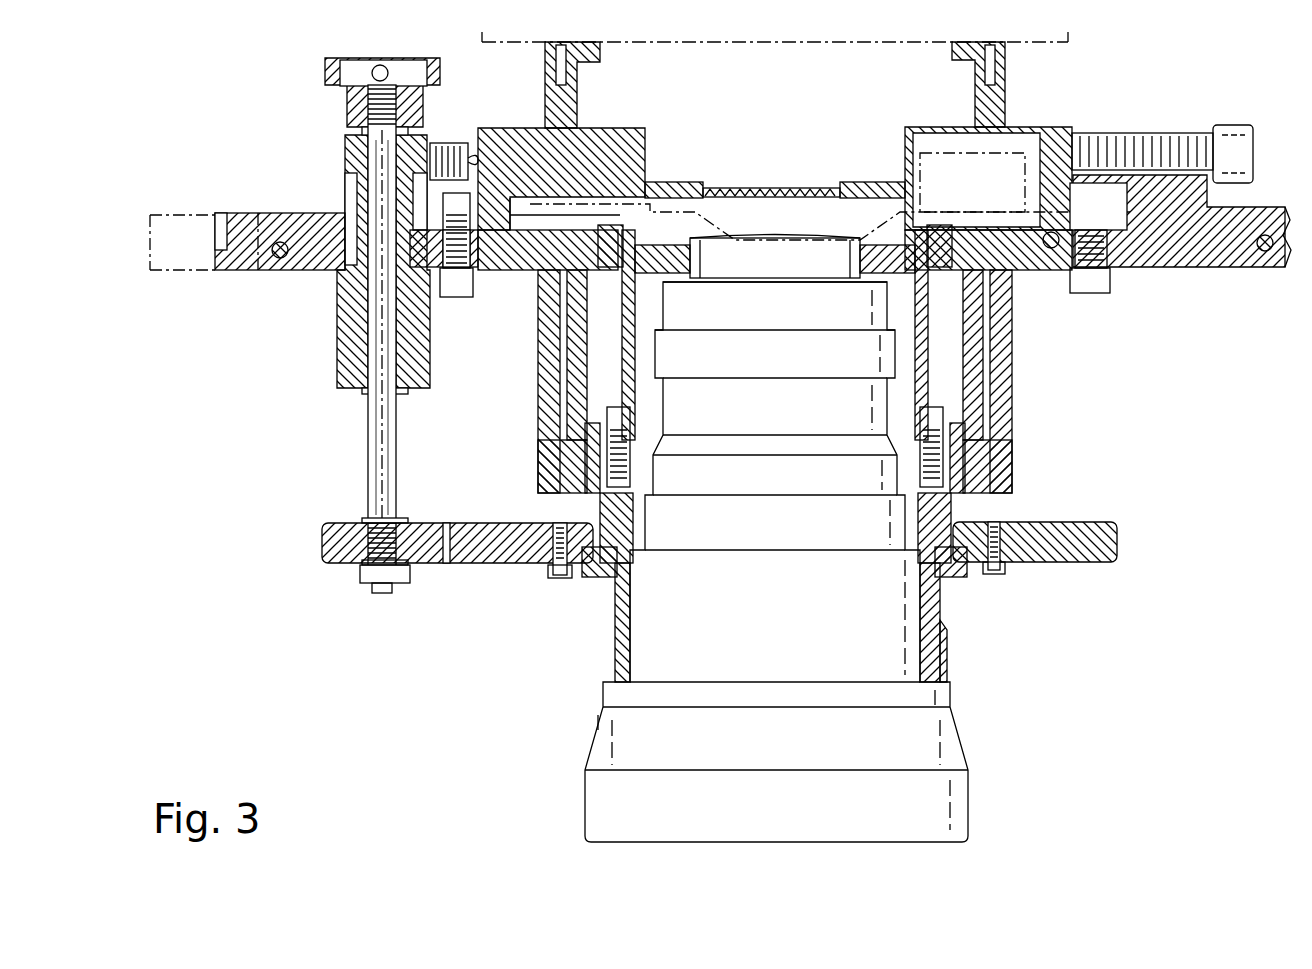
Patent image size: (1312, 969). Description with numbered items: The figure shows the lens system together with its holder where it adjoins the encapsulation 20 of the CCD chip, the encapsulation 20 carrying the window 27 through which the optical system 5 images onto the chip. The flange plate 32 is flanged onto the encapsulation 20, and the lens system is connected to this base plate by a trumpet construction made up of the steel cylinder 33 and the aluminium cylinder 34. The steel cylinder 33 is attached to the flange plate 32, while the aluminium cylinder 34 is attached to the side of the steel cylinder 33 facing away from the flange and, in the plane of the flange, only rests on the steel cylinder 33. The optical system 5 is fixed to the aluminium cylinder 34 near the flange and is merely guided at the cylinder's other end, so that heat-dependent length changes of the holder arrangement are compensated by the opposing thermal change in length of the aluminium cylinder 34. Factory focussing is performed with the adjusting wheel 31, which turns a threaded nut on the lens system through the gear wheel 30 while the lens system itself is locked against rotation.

The optical system 5 is at (786, 630).
The encapsulation 20 is at (625, 157).
The window 27 is at (795, 188).
The gear wheel 30 is at (517, 555).
The adjusting wheel 31 is at (380, 460).
The flange plate 32 is at (527, 258).
The steel cylinder 33 is at (548, 367).
The aluminium cylinder 34 is at (575, 398).